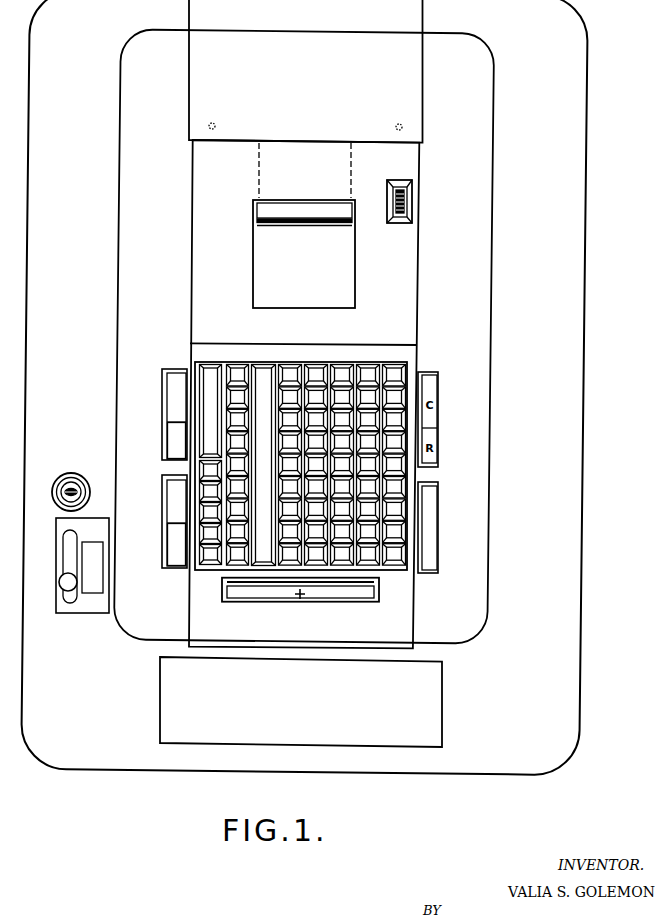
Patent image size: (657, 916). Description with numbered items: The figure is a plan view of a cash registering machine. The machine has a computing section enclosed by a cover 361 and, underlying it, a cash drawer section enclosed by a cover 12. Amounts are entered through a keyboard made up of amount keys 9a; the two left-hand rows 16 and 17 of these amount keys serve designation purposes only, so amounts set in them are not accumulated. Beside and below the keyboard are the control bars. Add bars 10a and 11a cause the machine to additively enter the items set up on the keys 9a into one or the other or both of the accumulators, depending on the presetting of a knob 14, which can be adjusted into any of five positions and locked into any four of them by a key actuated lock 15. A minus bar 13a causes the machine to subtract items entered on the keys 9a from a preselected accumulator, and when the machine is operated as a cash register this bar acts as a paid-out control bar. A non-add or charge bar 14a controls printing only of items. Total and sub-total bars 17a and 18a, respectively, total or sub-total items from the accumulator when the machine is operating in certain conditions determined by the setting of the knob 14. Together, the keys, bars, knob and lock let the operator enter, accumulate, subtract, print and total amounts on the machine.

The cover 12 is at (578, 173).
The cover 361 is at (483, 163).
The amount keys 9a is at (401, 375).
The add bar 10a is at (327, 596).
The add bar 11a is at (438, 566).
The minus bar 13a is at (176, 568).
The knob 14 is at (62, 592).
The non-add or charge bar 14a is at (166, 500).
The key actuated lock 15 is at (60, 476).
The left-hand row of amount keys 16 is at (196, 568).
The left-hand row of amount keys 17 is at (224, 572).
The total bar 17a is at (170, 394).
The sub-total bar 18a is at (173, 443).